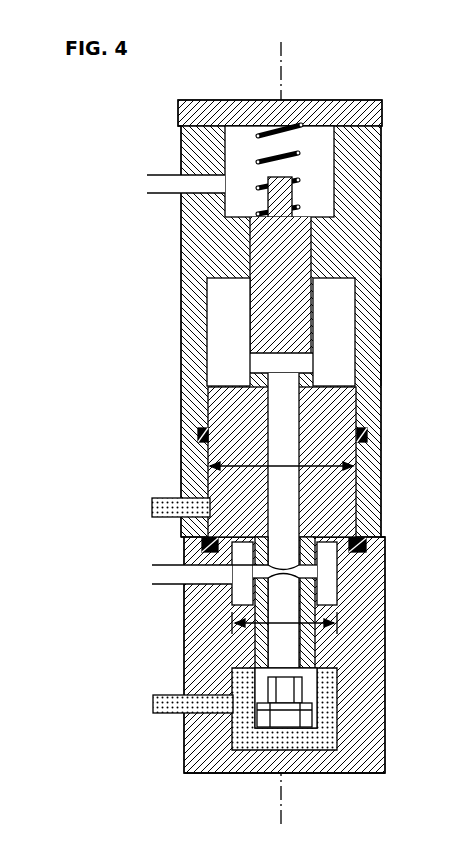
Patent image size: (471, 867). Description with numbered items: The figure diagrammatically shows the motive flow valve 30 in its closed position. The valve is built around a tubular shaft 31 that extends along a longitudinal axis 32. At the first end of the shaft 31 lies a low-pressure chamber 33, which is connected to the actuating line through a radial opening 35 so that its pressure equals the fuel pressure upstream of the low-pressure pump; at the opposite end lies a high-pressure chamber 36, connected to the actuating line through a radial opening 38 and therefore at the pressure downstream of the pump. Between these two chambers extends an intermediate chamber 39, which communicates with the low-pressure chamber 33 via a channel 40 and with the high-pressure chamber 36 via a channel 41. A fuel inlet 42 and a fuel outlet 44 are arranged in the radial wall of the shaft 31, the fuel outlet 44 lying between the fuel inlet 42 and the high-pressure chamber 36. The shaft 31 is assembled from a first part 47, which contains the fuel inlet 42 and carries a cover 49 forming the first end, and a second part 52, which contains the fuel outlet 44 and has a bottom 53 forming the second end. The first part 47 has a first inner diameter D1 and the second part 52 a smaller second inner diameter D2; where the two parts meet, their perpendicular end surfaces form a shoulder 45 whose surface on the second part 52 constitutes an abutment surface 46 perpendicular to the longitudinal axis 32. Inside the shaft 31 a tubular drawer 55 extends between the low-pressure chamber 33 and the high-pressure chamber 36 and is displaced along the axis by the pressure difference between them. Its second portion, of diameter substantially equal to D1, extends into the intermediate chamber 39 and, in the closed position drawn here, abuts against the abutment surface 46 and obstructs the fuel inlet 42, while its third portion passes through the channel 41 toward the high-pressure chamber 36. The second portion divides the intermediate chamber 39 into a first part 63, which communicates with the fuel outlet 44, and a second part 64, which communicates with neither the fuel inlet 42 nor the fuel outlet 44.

The motive flow valve 30 is at (403, 97).
The tubular shaft 31 is at (385, 229).
The longitudinal axis 32 is at (277, 58).
The low-pressure chamber 33 is at (318, 165).
The radial opening 35 is at (203, 183).
The high-pressure chamber 36 is at (328, 735).
The radial opening 38 is at (210, 710).
The intermediate chamber 39 is at (340, 358).
The channel 40 is at (252, 242).
The channel 41 is at (313, 640).
The fuel inlet 42 is at (200, 504).
The fuel outlet 44 is at (207, 573).
The shoulder 45 is at (223, 546).
The abutment surface 46 is at (345, 530).
The first part 47 is at (370, 282).
The cover 49 is at (233, 117).
The second part 52 is at (370, 707).
The bottom 53 is at (253, 765).
The tubular drawer 55 is at (246, 317).
The first part of the intermediate chamber 63 is at (330, 583).
The second part of the intermediate chamber 64 is at (342, 320).
The first inner diameter D1 is at (250, 466).
The second inner diameter D2 is at (273, 641).